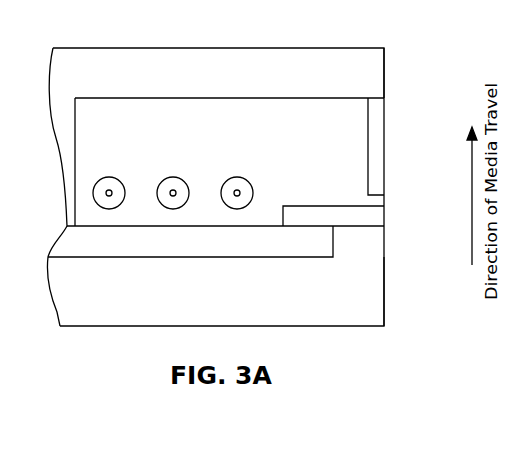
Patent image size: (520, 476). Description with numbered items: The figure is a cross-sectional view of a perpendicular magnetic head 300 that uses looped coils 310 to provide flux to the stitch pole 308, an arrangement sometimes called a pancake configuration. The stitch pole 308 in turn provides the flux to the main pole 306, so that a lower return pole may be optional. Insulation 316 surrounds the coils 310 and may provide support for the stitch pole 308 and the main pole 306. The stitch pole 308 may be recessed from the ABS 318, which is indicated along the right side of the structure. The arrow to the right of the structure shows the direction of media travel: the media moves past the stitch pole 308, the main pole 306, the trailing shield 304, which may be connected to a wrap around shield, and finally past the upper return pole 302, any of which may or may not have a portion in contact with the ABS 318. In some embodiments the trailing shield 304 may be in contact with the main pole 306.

The perpendicular magnetic head 300 is at (125, 32).
The upper return pole 302 is at (229, 80).
The trailing shield 304 is at (385, 128).
The main pole 306 is at (385, 212).
The stitch pole 308 is at (216, 241).
The looped coils 310 is at (107, 177).
The insulation 316 is at (206, 162).
The ABS 318 is at (384, 62).